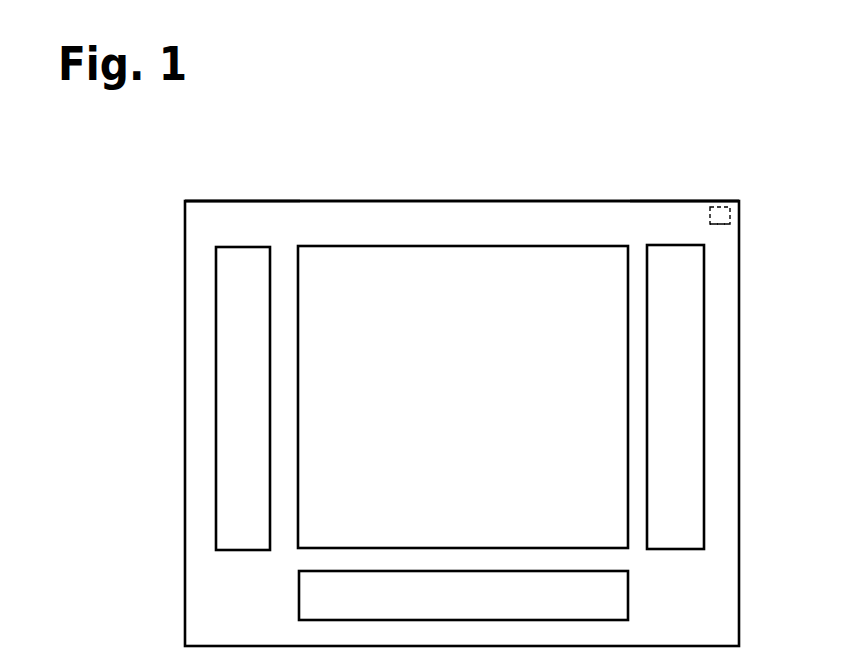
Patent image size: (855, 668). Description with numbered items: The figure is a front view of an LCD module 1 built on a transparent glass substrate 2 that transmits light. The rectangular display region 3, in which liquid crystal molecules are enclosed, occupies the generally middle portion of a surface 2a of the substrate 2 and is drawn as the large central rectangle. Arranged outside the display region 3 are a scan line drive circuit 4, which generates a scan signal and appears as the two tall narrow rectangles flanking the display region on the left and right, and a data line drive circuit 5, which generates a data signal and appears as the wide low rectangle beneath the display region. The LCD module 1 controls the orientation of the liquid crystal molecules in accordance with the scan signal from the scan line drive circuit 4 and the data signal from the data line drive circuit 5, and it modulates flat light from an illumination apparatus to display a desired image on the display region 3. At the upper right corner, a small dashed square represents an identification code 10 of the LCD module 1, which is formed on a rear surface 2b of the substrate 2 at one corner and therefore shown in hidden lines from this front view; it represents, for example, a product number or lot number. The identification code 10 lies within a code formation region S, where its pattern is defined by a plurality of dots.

The LCD module 1 is at (752, 195).
The transparent glass substrate 2 is at (447, 201).
The surface of the substrate 2a is at (341, 207).
The rear surface of the substrate 2b is at (667, 208).
The display region 3 is at (475, 415).
The scan line drive circuit 4 is at (256, 415).
The data line drive circuit 5 is at (476, 610).
The identification code 10 is at (731, 212).
The code formation region S is at (728, 226).